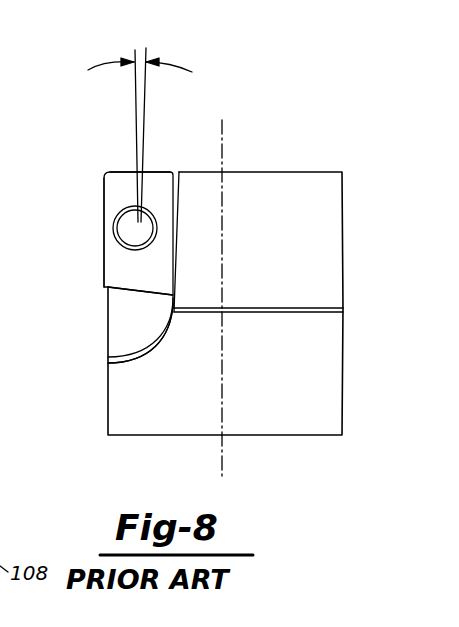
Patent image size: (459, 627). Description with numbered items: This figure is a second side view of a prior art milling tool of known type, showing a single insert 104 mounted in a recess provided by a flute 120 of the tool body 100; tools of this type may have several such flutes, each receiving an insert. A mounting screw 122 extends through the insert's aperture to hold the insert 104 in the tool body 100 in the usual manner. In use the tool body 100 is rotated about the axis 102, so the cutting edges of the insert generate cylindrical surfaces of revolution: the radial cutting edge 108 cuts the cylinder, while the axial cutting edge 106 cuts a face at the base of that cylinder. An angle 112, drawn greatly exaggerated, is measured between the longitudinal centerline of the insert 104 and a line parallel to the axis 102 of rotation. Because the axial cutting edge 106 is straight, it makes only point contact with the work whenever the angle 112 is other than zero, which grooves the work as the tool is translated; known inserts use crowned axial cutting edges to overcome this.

The tool body 100 is at (120, 390).
The axis 102 is at (222, 135).
The insert 104 is at (104, 194).
The axial cutting edge 106 is at (118, 172).
The radial cutting edge 108 is at (104, 245).
The angle 112 is at (180, 67).
The flute 120 is at (110, 305).
The mounting screw 122 is at (147, 229).